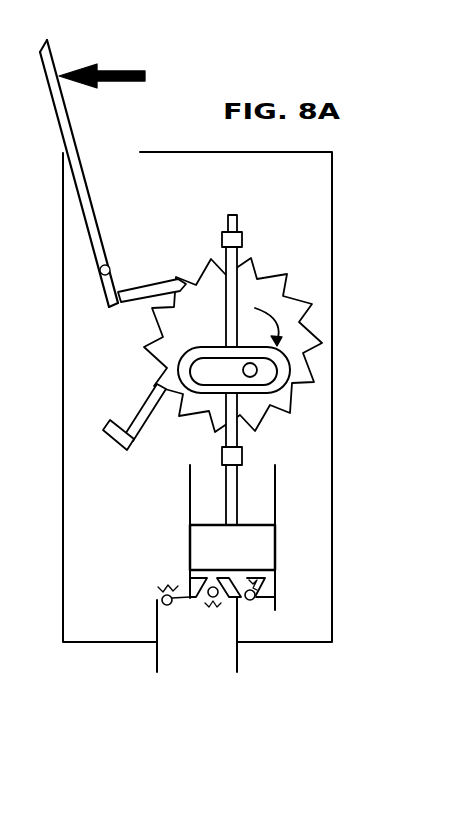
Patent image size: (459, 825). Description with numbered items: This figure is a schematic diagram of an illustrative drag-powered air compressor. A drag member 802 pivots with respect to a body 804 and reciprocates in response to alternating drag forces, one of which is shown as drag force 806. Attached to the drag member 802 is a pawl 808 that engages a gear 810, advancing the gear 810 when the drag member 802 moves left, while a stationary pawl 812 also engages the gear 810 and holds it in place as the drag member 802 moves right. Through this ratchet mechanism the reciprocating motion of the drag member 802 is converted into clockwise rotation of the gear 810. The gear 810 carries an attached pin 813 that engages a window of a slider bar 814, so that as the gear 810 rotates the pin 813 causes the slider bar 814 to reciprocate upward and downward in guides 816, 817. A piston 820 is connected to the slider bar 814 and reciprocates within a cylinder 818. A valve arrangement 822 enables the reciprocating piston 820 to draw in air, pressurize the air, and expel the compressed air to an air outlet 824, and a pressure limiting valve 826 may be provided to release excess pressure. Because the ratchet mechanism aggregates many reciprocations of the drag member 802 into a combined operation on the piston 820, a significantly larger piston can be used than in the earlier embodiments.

The drag member 802 is at (55, 57).
The body 804 is at (334, 199).
The drag force 806 is at (106, 65).
The pawl 808 is at (154, 283).
The gear 810 is at (283, 280).
The stationary pawl 812 is at (146, 406).
The pin 813 is at (253, 373).
The slider bar 814 is at (227, 218).
The guide 816 is at (221, 238).
The guide 817 is at (222, 457).
The cylinder 818 is at (190, 570).
The piston 820 is at (256, 560).
The valve arrangement 822 is at (218, 598).
The air outlet 824 is at (214, 669).
The pressure limiting valve 826 is at (161, 598).